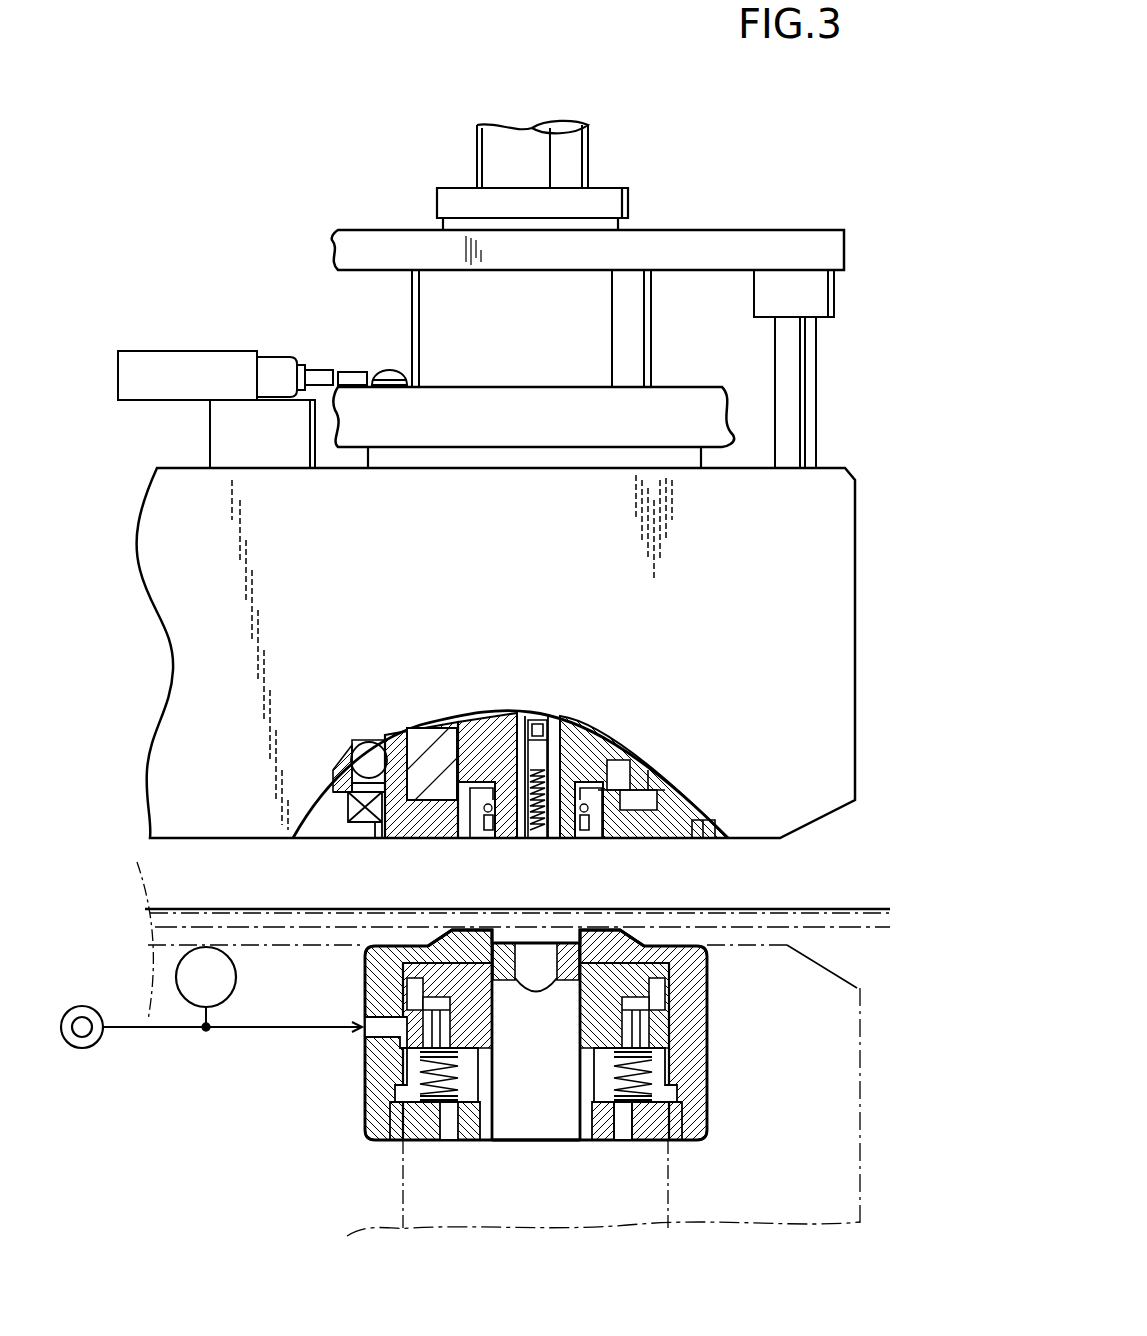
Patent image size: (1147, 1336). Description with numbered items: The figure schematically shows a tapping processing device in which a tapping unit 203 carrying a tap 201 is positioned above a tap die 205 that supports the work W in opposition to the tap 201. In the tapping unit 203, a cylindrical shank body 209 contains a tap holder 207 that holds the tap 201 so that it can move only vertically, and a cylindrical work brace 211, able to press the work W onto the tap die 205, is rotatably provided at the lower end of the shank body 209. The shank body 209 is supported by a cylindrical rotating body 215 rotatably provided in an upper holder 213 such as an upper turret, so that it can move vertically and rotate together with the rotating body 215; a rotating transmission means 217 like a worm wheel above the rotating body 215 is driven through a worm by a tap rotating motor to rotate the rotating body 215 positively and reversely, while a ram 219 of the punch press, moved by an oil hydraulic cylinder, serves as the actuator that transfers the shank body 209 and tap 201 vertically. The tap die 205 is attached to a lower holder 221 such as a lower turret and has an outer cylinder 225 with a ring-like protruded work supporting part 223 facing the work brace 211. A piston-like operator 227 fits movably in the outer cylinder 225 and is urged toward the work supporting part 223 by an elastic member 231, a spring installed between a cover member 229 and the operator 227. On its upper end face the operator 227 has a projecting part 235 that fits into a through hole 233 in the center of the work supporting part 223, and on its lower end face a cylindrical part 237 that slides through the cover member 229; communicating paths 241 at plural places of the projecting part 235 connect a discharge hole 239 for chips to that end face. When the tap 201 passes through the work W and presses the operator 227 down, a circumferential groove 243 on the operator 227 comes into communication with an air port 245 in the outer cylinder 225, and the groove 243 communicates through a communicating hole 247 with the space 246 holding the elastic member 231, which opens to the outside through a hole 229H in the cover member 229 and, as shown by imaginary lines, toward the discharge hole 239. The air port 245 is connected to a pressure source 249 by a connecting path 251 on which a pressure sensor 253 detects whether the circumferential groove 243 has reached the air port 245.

The tap 201 is at (520, 840).
The tapping unit 203 is at (583, 801).
The tap die 205 is at (546, 1061).
The tap holder 207 is at (577, 840).
The shank body 209 is at (485, 748).
The work brace 211 is at (475, 840).
The upper holder 213 is at (838, 653).
The rotating body 215 is at (442, 753).
The rotating transmission means 217 is at (738, 385).
The ram 219 is at (577, 148).
The lower holder 221 is at (840, 1168).
The work supporting part 223 is at (615, 927).
The outer cylinder 225 is at (712, 975).
The operator 227 is at (410, 1000).
The cover member 229 is at (393, 1142).
The hole 229H is at (623, 1142).
The elastic member 231 is at (632, 1142).
The through hole 233 is at (452, 930).
The projecting part 235 is at (553, 945).
The cylindrical part 237 is at (492, 1142).
The discharge hole 239 is at (552, 1142).
The communicating paths 241 is at (536, 998).
The circumferential groove 243 is at (662, 1003).
The air port 245 is at (362, 1032).
The space 246 is at (372, 1095).
The communicating hole 247 is at (665, 943).
The pressure source 249 is at (98, 1047).
The connecting path 251 is at (137, 1027).
The pressure sensor 253 is at (237, 992).
The work W is at (501, 925).